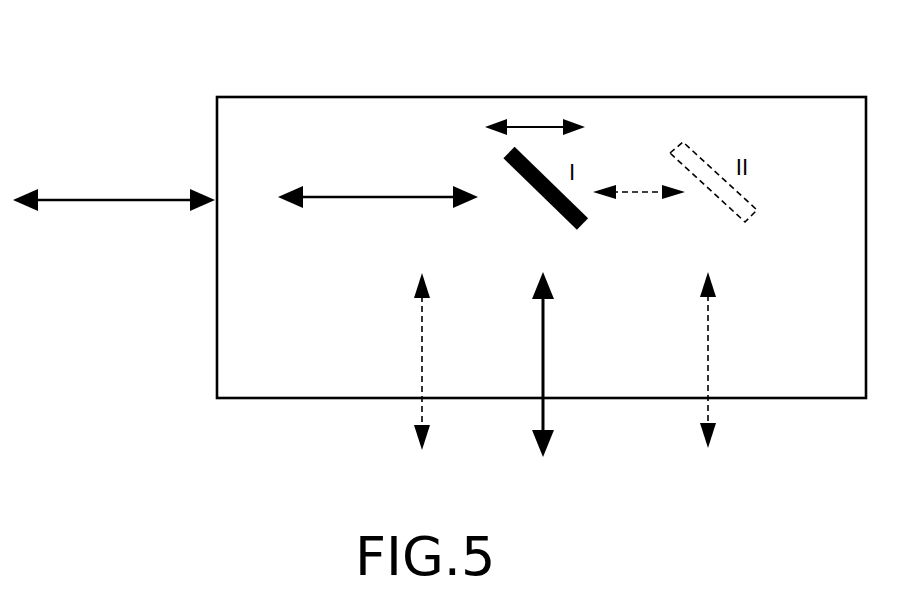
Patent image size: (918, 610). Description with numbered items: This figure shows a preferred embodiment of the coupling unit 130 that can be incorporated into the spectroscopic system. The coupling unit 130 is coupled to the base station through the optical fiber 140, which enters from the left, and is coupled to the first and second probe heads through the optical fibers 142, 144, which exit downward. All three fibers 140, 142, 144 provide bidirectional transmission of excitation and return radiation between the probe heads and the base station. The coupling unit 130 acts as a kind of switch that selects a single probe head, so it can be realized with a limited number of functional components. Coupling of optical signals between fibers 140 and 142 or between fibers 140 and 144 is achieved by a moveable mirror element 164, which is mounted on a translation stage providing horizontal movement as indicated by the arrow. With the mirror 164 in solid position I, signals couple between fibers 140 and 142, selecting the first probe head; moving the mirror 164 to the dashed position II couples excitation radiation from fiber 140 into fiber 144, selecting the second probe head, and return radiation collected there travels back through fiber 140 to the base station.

The coupling unit 130 is at (678, 96).
The optical fiber 140 is at (113, 198).
The optical fiber 142 is at (545, 356).
The optical fiber 144 is at (710, 352).
The moveable mirror element 164 is at (542, 196).